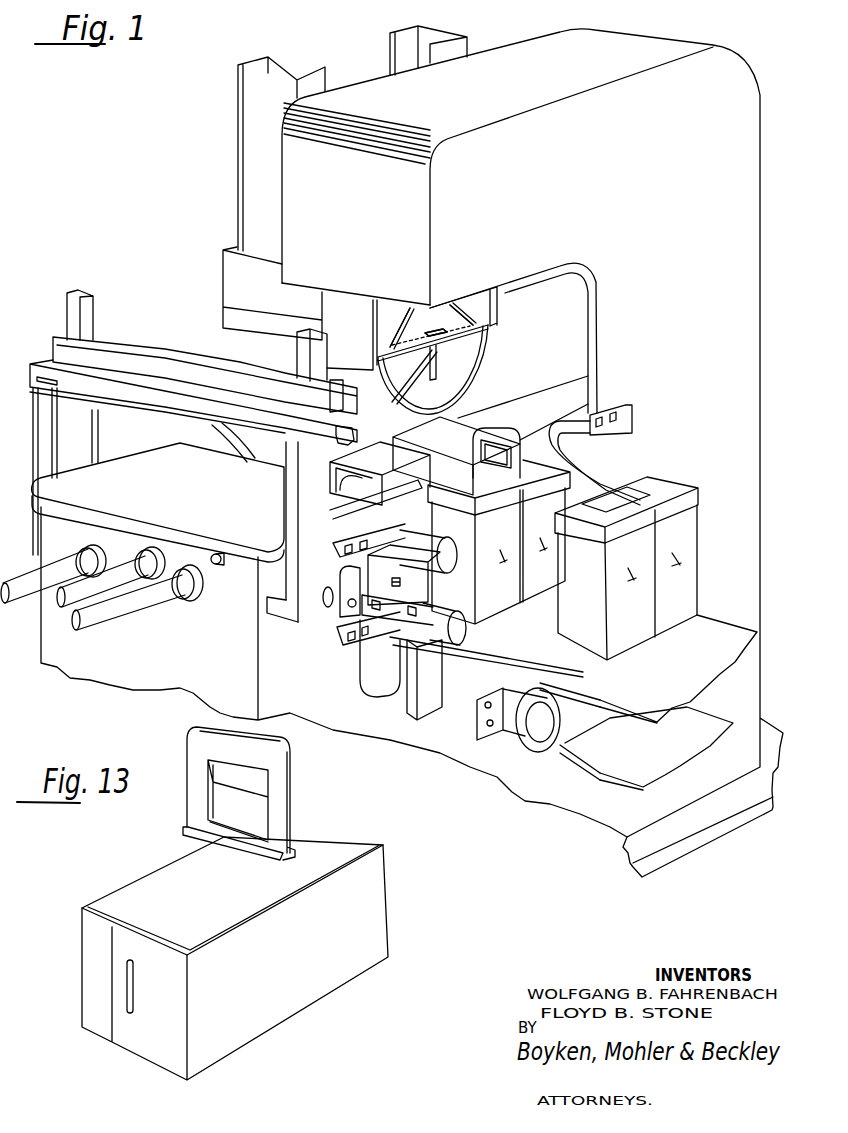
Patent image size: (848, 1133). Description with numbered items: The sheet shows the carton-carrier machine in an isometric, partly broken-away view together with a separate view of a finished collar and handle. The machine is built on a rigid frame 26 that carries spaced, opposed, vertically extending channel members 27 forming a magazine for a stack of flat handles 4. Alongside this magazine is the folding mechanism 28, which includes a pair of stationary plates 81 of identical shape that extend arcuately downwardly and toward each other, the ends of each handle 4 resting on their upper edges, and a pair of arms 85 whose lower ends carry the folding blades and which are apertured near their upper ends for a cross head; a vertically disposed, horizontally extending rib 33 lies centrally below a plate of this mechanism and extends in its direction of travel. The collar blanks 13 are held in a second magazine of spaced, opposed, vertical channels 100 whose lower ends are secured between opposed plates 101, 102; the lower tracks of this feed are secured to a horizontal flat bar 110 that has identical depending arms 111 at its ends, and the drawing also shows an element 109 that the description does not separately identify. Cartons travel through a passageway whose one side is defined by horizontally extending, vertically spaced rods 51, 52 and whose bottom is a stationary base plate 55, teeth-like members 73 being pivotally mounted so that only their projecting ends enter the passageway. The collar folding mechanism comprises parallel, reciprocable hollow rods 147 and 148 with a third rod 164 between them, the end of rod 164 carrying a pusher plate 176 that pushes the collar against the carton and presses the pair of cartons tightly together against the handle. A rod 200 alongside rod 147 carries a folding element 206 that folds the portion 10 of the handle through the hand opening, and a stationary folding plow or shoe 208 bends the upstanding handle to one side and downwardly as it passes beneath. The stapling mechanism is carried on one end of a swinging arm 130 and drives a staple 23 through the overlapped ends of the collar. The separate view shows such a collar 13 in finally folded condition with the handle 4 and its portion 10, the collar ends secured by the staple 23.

In FIG. 1, the rigid frame 26 is at (753, 273).
In FIG. 1, the channel members 27 is at (390, 53).
In FIG. 1, the folding mechanism 28 is at (514, 306).
In FIG. 1, the arms 85 is at (398, 328).
In FIG. 1, the handle 4 is at (433, 324).
In FIG. 13, the handle 4 is at (296, 787).
In FIG. 1, the stationary plates 81 is at (488, 372).
In FIG. 1, the rib 33 is at (392, 404).
In FIG. 1, the horizontal flat bar 110 is at (92, 327).
In FIG. 1, the vertical channels 100 is at (297, 357).
In FIG. 1, the depending arms 111 is at (107, 439).
In FIG. 1, the plate 102 is at (222, 359).
In FIG. 1, the plate 101 is at (53, 345).
In FIG. 1, the table 109 is at (215, 441).
In FIG. 1, the hollow rod 148 is at (33, 573).
In FIG. 1, the third rod 164 is at (56, 600).
In FIG. 1, the hollow rod 147 is at (99, 630).
In FIG. 1, the rod 200 is at (223, 568).
In FIG. 1, the pusher plate 176 is at (340, 491).
In FIG. 1, the folding element 206 is at (415, 489).
In FIG. 1, the arm 130 is at (553, 387).
In FIG. 1, the folding plow or shoe 208 is at (601, 470).
In FIG. 1, the collar blank 13 is at (698, 497).
In FIG. 13, the collar blank 13 is at (145, 876).
In FIG. 1, the stationary base plate 55 is at (384, 536).
In FIG. 1, the teeth-like members 73 is at (391, 578).
In FIG. 1, the rod 51 is at (452, 571).
In FIG. 1, the rod 52 is at (460, 636).
In FIG. 13, the portion 10 is at (243, 790).
In FIG. 13, the staple 23 is at (125, 987).